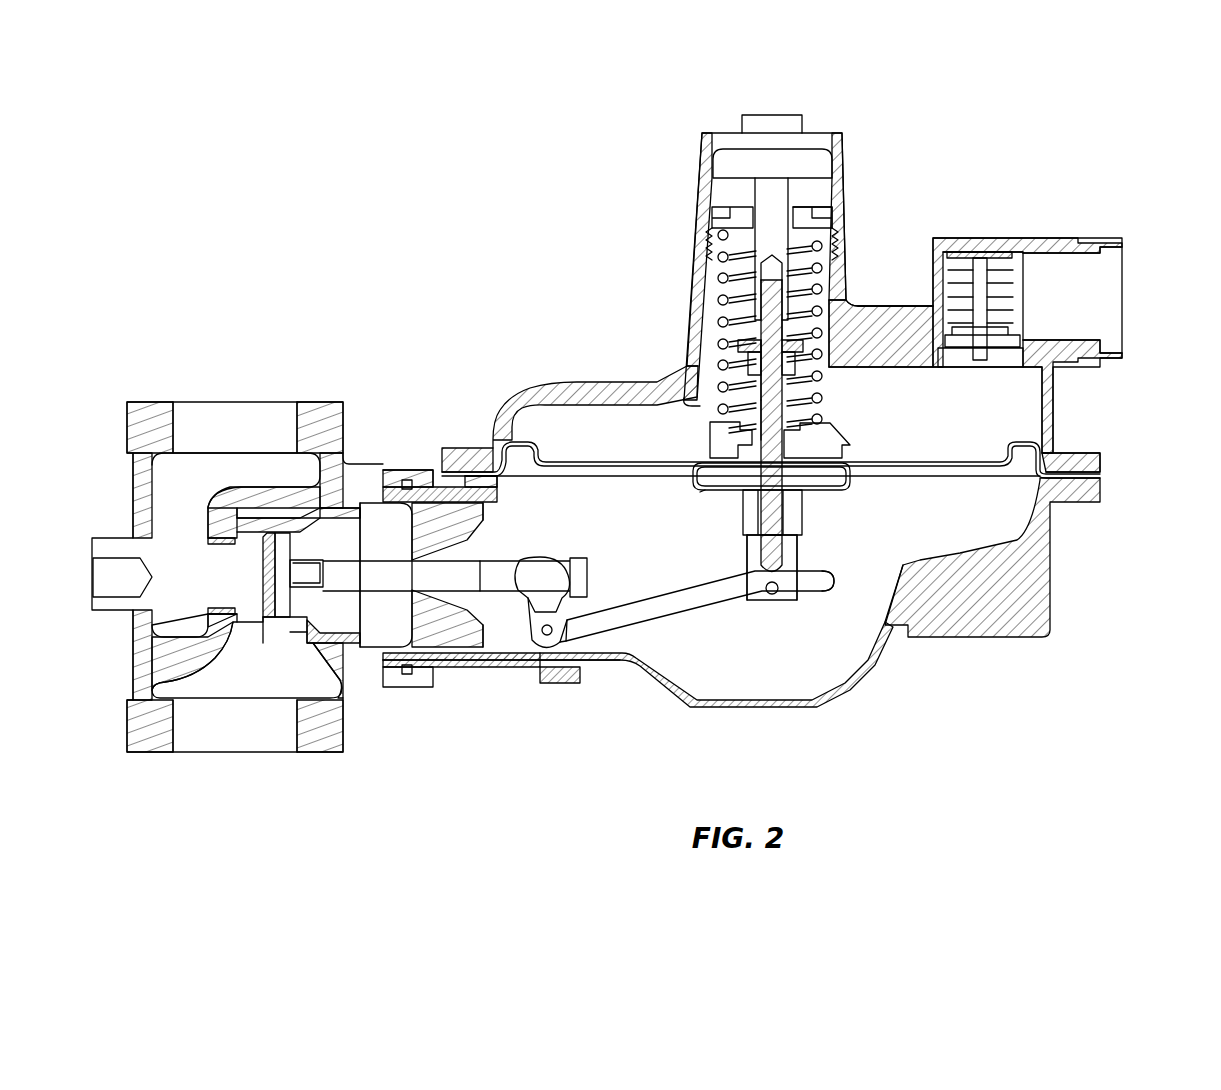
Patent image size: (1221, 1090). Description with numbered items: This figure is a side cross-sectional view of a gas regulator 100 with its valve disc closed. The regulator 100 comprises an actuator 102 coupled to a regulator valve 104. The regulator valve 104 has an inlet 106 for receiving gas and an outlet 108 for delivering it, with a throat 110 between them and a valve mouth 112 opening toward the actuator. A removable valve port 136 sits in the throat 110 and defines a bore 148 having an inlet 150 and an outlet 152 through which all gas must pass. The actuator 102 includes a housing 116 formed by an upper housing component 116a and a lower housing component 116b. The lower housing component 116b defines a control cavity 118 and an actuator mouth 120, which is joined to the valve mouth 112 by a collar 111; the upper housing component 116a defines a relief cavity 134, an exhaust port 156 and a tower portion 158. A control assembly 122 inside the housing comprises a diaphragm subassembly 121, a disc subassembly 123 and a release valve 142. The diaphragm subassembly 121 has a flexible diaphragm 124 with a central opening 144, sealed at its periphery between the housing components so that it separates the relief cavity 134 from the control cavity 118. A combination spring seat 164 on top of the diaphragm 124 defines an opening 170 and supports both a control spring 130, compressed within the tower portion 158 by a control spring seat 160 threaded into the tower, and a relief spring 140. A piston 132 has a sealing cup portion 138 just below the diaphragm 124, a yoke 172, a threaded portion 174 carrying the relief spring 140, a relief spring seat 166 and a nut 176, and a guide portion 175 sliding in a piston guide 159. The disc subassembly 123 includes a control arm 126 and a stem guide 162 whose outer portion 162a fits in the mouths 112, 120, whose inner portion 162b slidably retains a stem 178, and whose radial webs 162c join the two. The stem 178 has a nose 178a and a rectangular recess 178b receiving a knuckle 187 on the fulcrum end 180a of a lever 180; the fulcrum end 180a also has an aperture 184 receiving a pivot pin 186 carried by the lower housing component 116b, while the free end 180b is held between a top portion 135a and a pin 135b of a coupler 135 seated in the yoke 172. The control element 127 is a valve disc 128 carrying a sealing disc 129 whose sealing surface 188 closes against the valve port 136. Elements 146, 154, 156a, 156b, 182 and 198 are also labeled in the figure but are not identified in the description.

The gas regulator 100 is at (880, 103).
The actuator 102 is at (850, 185).
The regulator valve 104 is at (345, 397).
The inlet 106 is at (180, 420).
The outlet 108 is at (180, 745).
The throat 110 is at (175, 640).
The collar 111 is at (407, 480).
The valve mouth 112 is at (400, 676).
The housing 116 is at (1050, 600).
The upper housing component 116a is at (720, 150).
The lower housing component 116b is at (860, 698).
The control cavity 118 is at (880, 640).
The actuator mouth 120 is at (505, 690).
The diaphragm subassembly 121 is at (607, 478).
The control assembly 122 is at (840, 498).
The disc subassembly 123 is at (388, 598).
The diaphragm 124 is at (1000, 462).
The control arm 126 is at (548, 553).
The control element 127 is at (288, 628).
The valve disc 128 is at (318, 560).
The sealing disc 129 is at (265, 617).
The control spring 130 is at (752, 315).
The piston 132 is at (790, 452).
The relief cavity 134 is at (1030, 390).
The coupler 135 is at (800, 552).
The top portion 135a is at (748, 548).
The pin 135b is at (772, 596).
The valve port 136 is at (108, 575).
The sealing cup portion 138 is at (850, 485).
The relief spring 140 is at (790, 375).
The release valve 142 is at (1010, 268).
The opening 144 is at (790, 395).
The relief valve stem 146 is at (982, 360).
The bore 148 is at (215, 610).
The inlet 150 is at (185, 515).
The outlet 152 is at (255, 500).
The relief spring 154 is at (1020, 300).
The exhaust port 156 is at (1105, 268).
The vent passage wall 156a is at (935, 322).
The vent spring chamber 156b is at (1060, 285).
The tower portion 158 is at (722, 218).
The piston guide 159 is at (765, 196).
The control spring seat 160 is at (805, 216).
The stem guide 162 is at (465, 640).
The outer portion 162a is at (430, 520).
The inner portion 162b is at (430, 603).
The radial webs 162c is at (470, 503).
The combination spring seat 164 is at (712, 440).
The relief spring seat 166 is at (792, 325).
The opening 170 is at (720, 405).
The yoke 172 is at (800, 510).
The threaded portion 174 is at (748, 380).
The guide portion 175 is at (778, 292).
The nut 176 is at (740, 400).
The stem 178 is at (390, 478).
The nose 178a is at (320, 509).
The recess 178b is at (525, 560).
The lever 180 is at (695, 592).
The fulcrum end 180a is at (600, 625).
The free end 180b is at (822, 584).
The upper seal 182 is at (245, 505).
The aperture 184 is at (545, 668).
The pivot pin 186 is at (545, 626).
The knuckle 187 is at (565, 572).
The sealing surface 188 is at (245, 630).
The relief valve seat 198 is at (1040, 338).